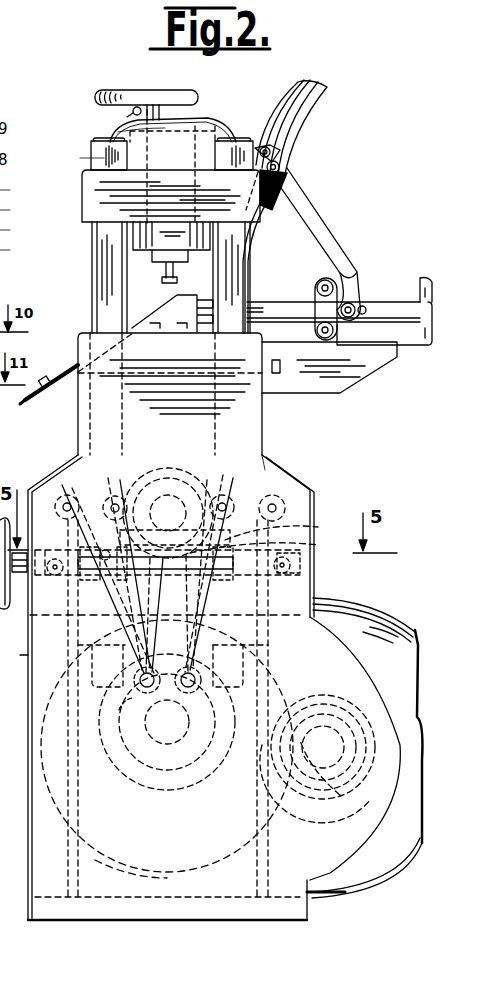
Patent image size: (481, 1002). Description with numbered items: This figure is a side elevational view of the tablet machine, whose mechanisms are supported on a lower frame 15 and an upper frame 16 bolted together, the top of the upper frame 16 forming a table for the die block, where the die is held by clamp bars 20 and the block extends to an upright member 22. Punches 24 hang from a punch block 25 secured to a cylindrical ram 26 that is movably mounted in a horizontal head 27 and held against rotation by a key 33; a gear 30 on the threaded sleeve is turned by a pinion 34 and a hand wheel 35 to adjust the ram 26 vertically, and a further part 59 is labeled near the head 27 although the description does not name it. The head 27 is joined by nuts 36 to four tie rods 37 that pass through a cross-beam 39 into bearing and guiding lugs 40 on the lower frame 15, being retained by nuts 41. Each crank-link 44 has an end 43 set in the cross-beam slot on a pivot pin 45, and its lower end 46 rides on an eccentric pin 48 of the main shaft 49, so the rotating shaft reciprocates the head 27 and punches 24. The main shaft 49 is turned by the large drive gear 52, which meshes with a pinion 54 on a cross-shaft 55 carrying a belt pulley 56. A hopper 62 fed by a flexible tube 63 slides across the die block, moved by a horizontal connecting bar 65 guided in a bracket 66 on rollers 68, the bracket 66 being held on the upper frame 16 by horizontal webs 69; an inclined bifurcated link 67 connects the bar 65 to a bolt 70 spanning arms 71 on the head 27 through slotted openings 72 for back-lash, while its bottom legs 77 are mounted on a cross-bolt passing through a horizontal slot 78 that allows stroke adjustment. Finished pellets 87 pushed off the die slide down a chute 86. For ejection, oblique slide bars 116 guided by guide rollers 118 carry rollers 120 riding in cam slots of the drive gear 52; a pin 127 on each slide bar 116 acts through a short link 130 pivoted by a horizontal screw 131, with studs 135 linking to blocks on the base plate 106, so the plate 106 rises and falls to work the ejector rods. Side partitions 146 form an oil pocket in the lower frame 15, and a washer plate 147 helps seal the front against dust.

The lower frame 15 is at (70, 885).
The upper frame 16 is at (300, 492).
The clamp bars 20 is at (180, 330).
The upright member 22 is at (12, 417).
The punches 24 is at (8, 255).
The punch block 25 is at (8, 234).
The ram 26 is at (8, 214).
The horizontal head 27 is at (8, 194).
The gear 30 is at (219, 127).
The key 33 is at (82, 215).
The pinion 34 is at (118, 132).
The hand wheel 35 is at (186, 96).
The nuts 36 is at (90, 142).
The tie rods 37 is at (100, 252).
The cross-beam 39 is at (305, 527).
The bearing and guiding lugs 40 is at (250, 667).
The nuts 41 is at (300, 586).
The end of crank-link 43 is at (178, 476).
The crank-links 44 is at (14, 657).
The pivot pins 45 is at (160, 490).
The lower ends of crank-links 46 is at (200, 720).
The eccentric pin 48 is at (185, 738).
The main shaft 49 is at (196, 787).
The drive gear 52 is at (200, 866).
The pinion 54 is at (338, 800).
The cross-shaft 55 is at (330, 718).
The pulley 56 is at (416, 630).
The bearing 59 is at (80, 158).
The hopper 62 is at (178, 310).
The flexible tube 63 is at (290, 157).
The connecting bar 65 is at (290, 309).
The bracket 66 is at (410, 346).
The bifurcated link 67 is at (335, 255).
The rollers 68 is at (340, 284).
The horizontal webs 69 is at (345, 375).
The bolt 70 is at (290, 172).
The arms 71 is at (263, 148).
The slotted elongated openings 72 is at (270, 152).
The bottom legs 77 is at (354, 304).
The horizontal slot 78 is at (366, 310).
The chute 86 is at (50, 392).
The pellets 87 is at (48, 382).
The base plate 106 is at (185, 575).
The slide bars 116 is at (280, 480).
The guide rollers 118 is at (288, 509).
The rollers 120 is at (134, 700).
The pin 127 is at (300, 548).
The short link 130 is at (300, 566).
The horizontal screw 131 is at (136, 577).
The studs 135 is at (147, 574).
The side partitions 146 is at (155, 812).
The washer plate 147 is at (154, 646).